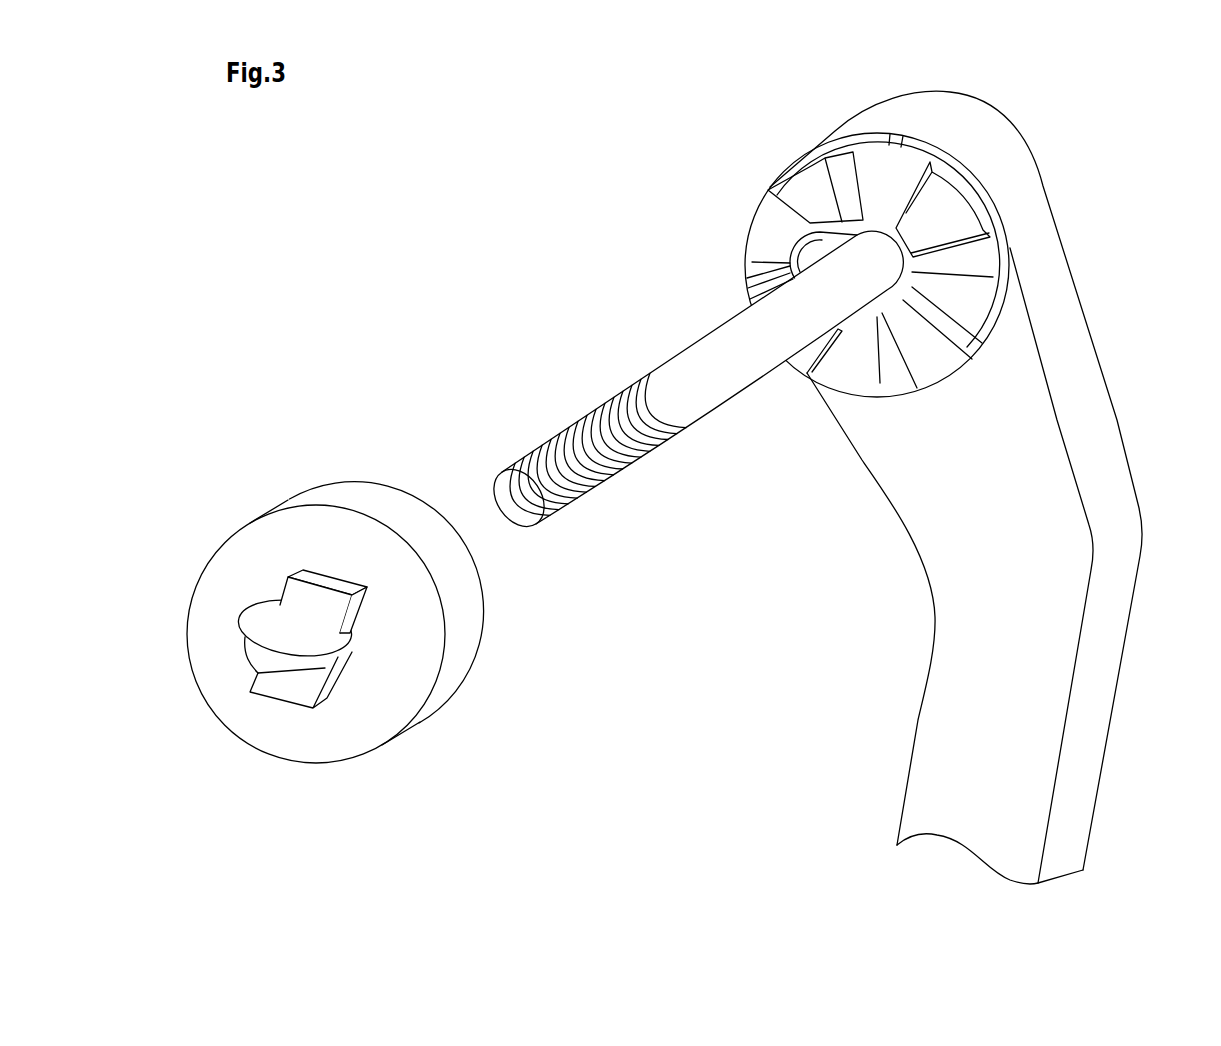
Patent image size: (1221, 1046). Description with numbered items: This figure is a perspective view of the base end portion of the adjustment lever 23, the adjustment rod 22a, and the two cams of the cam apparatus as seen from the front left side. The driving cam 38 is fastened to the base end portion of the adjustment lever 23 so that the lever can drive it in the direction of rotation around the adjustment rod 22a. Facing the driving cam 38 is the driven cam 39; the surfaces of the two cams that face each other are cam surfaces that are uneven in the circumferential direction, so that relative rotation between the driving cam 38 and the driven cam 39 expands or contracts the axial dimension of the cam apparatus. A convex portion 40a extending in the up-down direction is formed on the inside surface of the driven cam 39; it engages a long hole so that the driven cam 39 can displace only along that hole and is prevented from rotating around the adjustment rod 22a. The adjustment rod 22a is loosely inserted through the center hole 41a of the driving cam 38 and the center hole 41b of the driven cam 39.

The adjustment lever 23 is at (1103, 690).
The driving cam 38 is at (952, 220).
The adjustment rod 22a is at (683, 387).
The center hole 41a is at (745, 278).
The driven cam 39 is at (397, 670).
The convex portion 40a is at (305, 688).
The center hole 41b is at (250, 640).